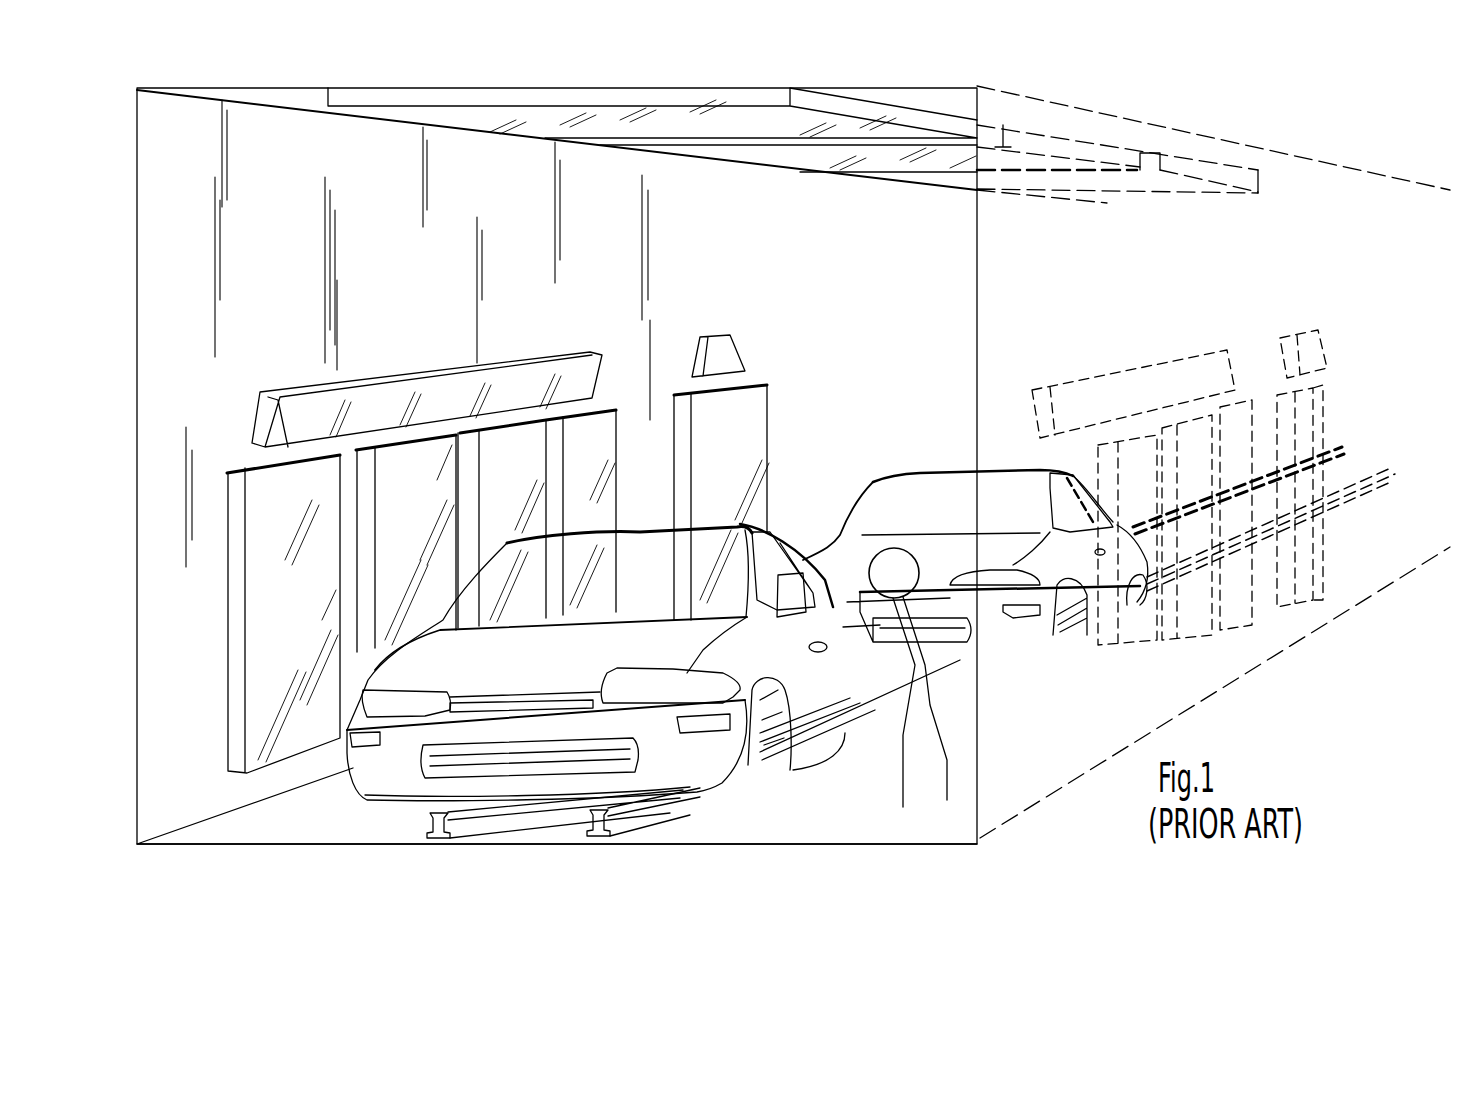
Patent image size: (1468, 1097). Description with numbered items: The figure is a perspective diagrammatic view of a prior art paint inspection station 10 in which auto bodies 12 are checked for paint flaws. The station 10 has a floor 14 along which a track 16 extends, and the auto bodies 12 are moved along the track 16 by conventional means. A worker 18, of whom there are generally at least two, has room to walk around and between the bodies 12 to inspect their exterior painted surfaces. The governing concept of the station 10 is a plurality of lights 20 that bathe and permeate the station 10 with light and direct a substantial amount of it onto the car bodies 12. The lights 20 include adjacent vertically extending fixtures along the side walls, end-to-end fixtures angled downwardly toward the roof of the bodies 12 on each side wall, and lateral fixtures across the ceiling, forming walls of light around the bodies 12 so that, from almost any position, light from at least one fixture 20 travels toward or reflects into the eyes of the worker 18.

The paint inspection station 10 is at (543, 80).
The auto body 12 is at (960, 660).
The floor 14 is at (297, 832).
The track 16 is at (603, 838).
The worker 18 is at (878, 558).
The lights 20 is at (453, 98).